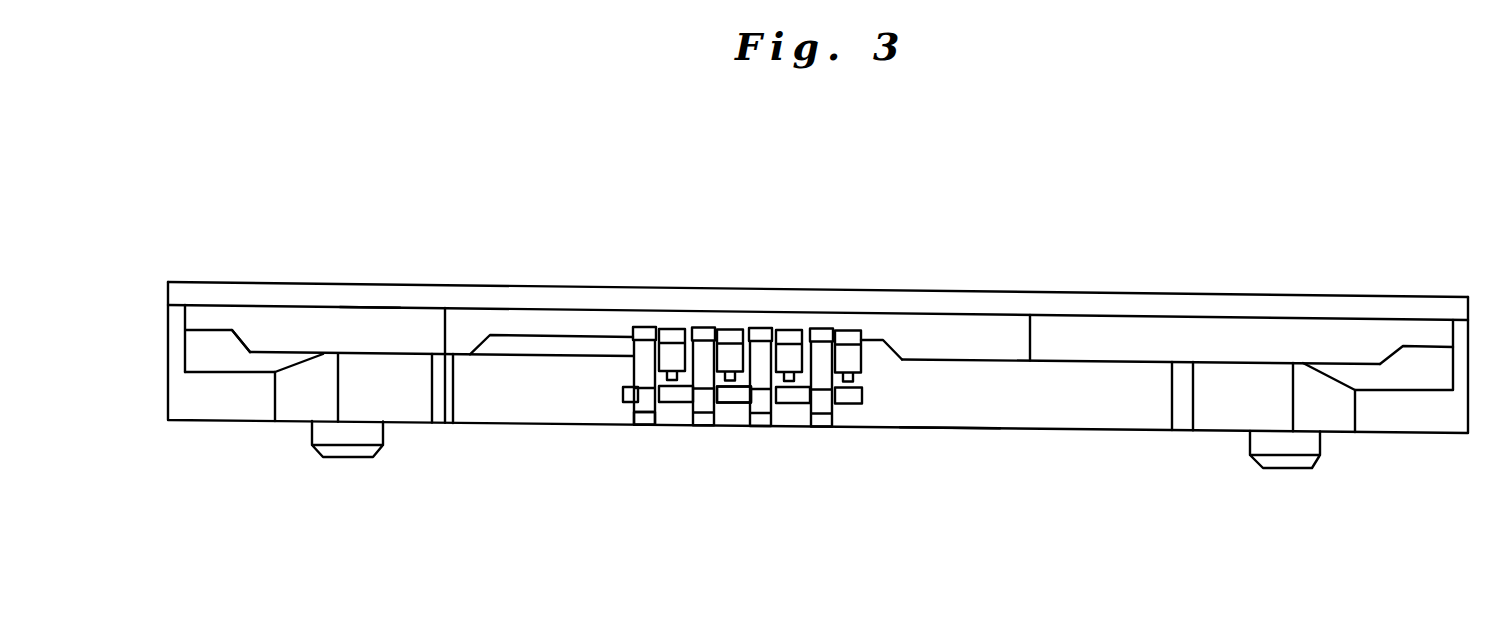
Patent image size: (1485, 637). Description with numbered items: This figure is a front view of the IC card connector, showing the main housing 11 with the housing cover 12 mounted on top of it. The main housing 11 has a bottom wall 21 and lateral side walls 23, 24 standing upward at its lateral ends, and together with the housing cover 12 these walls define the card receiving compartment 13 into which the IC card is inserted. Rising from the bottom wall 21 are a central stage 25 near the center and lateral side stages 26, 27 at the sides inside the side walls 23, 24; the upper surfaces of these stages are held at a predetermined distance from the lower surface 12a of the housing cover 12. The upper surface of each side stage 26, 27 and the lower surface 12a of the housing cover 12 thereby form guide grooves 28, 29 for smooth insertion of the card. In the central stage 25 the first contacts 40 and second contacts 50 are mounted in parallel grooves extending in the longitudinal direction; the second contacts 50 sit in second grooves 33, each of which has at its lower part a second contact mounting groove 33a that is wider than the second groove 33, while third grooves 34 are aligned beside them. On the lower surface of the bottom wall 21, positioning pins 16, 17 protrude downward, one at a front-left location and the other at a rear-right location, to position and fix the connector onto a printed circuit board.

The main housing 11 is at (1064, 430).
The housing cover 12 is at (1103, 292).
The lower surface of the housing cover 12a is at (380, 307).
The card receiving compartment 13 is at (960, 338).
The positioning pin 16 is at (345, 457).
The positioning pin 17 is at (1282, 468).
The bottom wall 21 is at (946, 424).
The lateral side wall 23 is at (178, 338).
The lateral side wall 24 is at (1457, 357).
The central stage 25 is at (577, 334).
The lateral side stage 26 is at (220, 331).
The lateral side stage 27 is at (1418, 340).
The guide groove 28 is at (202, 318).
The guide groove 29 is at (1432, 333).
The second groove 33 is at (646, 424).
The second contact mounting groove 33a is at (630, 398).
The third groove 34 is at (738, 384).
The first contact 40 is at (646, 327).
The second contact 50 is at (675, 329).